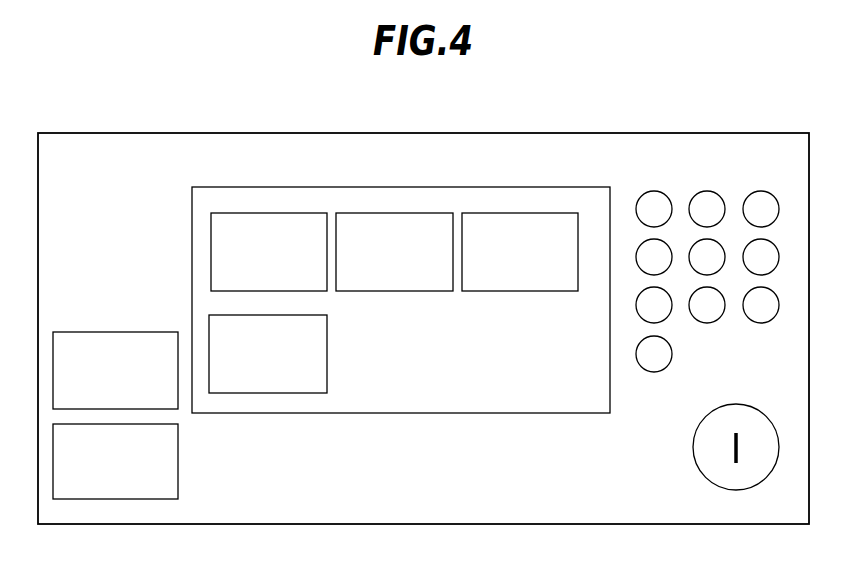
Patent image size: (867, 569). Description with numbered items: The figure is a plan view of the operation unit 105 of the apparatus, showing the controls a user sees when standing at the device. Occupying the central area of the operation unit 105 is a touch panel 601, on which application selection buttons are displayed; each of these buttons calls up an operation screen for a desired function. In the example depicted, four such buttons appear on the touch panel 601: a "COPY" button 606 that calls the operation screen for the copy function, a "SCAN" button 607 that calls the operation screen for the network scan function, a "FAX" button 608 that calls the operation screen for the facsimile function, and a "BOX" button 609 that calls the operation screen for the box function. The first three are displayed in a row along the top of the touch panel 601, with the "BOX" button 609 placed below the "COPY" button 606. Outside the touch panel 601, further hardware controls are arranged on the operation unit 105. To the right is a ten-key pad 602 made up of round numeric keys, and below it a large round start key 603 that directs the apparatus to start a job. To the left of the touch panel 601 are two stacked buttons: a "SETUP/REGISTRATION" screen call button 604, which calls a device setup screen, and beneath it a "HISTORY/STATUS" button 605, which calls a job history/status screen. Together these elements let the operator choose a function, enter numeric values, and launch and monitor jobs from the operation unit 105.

The operation unit 105 is at (735, 133).
The touch panel 601 is at (563, 414).
The ten-key pad 602 is at (660, 192).
The start key 603 is at (698, 471).
The "SETUP/REGISTRATION" screen call button 604 is at (145, 332).
The "HISTORY/STATUS" button 605 is at (179, 462).
The "COPY" button 606 is at (307, 213).
The "SCAN" button 607 is at (427, 213).
The "FAX" button 608 is at (549, 213).
The "BOX" button 609 is at (328, 357).